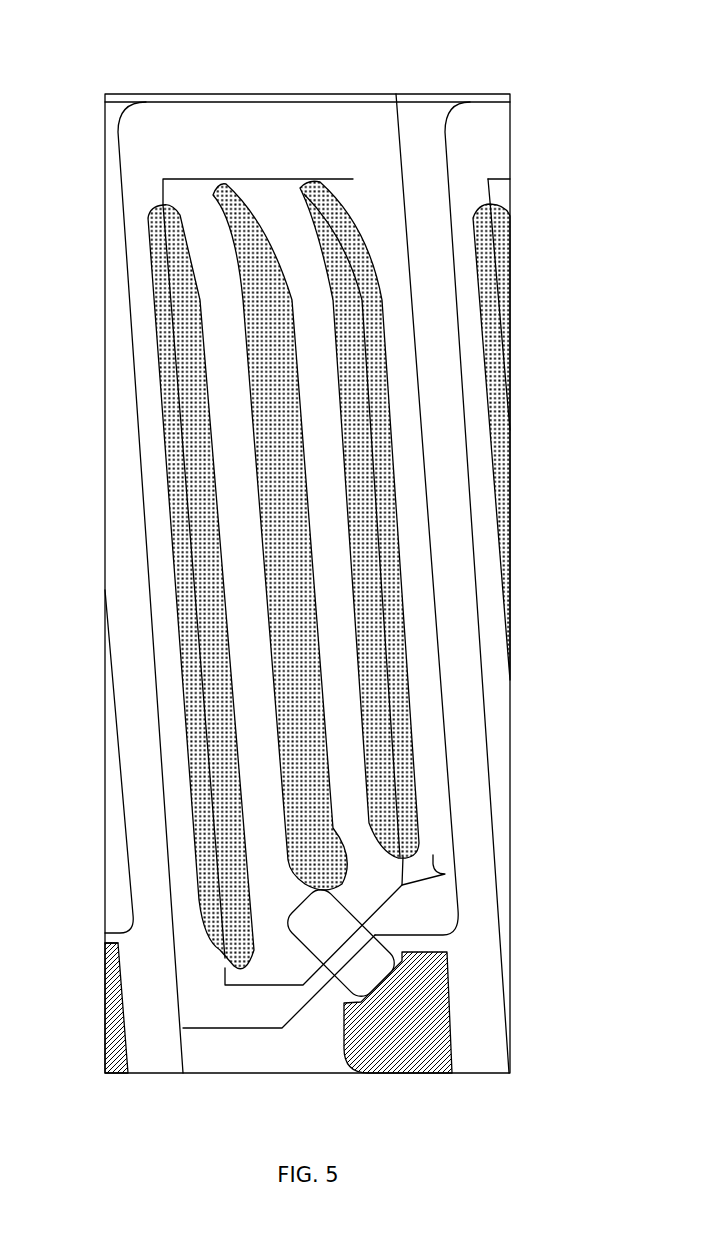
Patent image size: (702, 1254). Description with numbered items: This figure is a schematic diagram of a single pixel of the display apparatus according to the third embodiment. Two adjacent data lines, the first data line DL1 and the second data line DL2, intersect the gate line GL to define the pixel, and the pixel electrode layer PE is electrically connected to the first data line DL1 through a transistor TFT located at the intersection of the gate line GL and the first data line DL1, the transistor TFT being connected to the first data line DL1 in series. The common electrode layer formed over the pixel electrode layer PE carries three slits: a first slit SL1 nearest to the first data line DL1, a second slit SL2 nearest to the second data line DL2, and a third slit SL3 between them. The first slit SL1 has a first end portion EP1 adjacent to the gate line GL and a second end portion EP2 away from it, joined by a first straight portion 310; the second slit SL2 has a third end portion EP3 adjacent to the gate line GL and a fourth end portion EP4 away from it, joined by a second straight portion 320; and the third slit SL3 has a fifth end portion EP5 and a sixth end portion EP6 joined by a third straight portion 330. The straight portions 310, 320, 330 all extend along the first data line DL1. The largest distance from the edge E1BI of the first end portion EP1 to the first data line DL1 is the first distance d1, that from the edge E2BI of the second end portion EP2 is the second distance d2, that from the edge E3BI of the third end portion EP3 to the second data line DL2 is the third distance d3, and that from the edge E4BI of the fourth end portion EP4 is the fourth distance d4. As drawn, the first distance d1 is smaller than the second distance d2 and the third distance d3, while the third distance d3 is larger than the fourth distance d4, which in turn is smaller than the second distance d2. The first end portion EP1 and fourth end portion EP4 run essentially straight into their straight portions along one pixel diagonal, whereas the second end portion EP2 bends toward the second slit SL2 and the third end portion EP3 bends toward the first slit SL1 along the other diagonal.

The pixel electrode layer PE is at (270, 990).
The gate line GL is at (310, 1055).
The transistor TFT is at (405, 1055).
The first data line DL1 is at (440, 345).
The second data line DL2 is at (134, 346).
The first slit SL1 is at (317, 181).
The second slit SL2 is at (184, 197).
The third slit SL3 is at (224, 185).
The first straight portion 310 is at (382, 422).
The second straight portion 320 is at (183, 567).
The third straight portion 330 is at (290, 493).
The first end portion EP1 is at (420, 817).
The second end portion EP2 is at (357, 227).
The third end portion EP3 is at (210, 944).
The fourth end portion EP4 is at (158, 203).
The fifth end portion EP5 is at (447, 874).
The sixth end portion EP6 is at (288, 195).
The edge of the first end portion E1BI is at (420, 842).
The edge of the second end portion E2BI is at (353, 197).
The edge of the third end portion E3BI is at (212, 955).
The edge of the fourth end portion E4BI is at (155, 216).
The first distance d1 is at (410, 855).
The second distance d2 is at (318, 187).
The third distance d3 is at (245, 968).
The fourth distance d4 is at (163, 207).